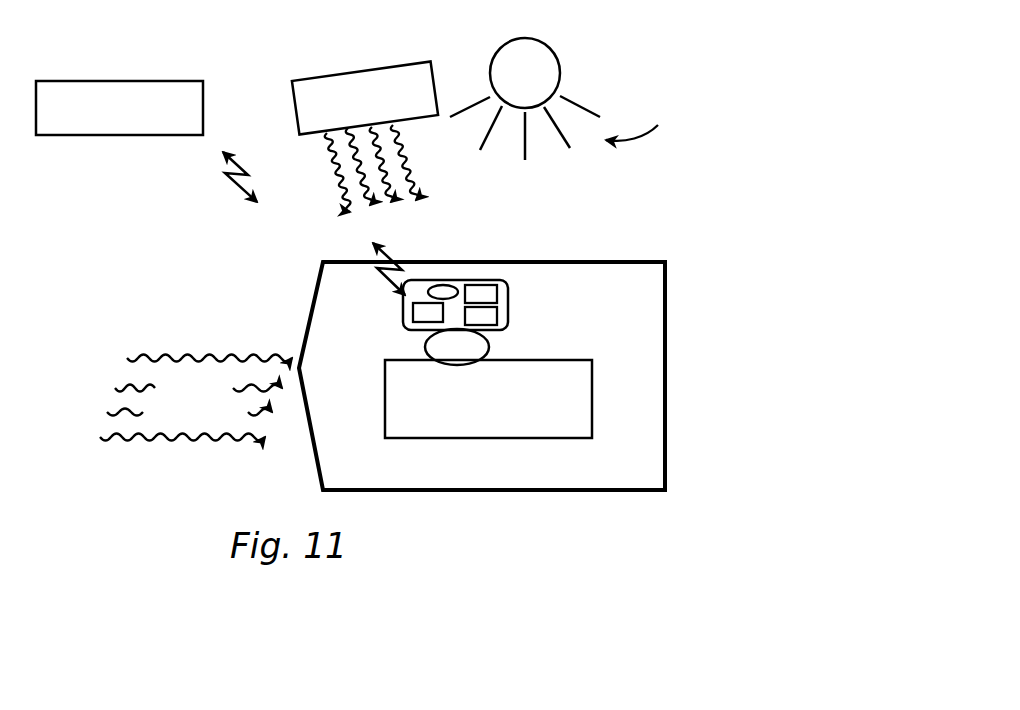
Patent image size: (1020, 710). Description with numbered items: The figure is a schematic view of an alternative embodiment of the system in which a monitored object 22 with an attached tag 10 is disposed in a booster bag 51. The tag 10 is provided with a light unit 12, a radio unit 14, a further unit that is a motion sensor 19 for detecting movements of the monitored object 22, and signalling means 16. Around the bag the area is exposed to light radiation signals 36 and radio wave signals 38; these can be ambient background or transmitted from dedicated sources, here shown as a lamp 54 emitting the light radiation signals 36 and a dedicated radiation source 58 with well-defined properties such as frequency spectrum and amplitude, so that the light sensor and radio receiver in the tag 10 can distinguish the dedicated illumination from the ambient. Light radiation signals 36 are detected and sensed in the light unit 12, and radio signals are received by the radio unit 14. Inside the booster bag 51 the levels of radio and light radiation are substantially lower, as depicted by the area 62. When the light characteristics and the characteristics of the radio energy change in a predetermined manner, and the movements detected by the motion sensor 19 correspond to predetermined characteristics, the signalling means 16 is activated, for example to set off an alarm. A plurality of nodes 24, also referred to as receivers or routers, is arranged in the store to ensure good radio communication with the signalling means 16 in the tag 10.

The tag 10 is at (509, 282).
The light unit 12 is at (443, 290).
The radio unit 14 is at (478, 290).
The signalling means 16 is at (413, 312).
The motion sensor 19 is at (493, 312).
The monitored object 22 is at (578, 408).
The nodes 24 is at (72, 90).
The light radiation signals 36 is at (651, 118).
The radio wave signals 38 is at (106, 390).
The booster bag 51 is at (668, 287).
The lamp 54 is at (545, 63).
The dedicated radiation source 58 is at (293, 89).
The area 62 is at (638, 373).